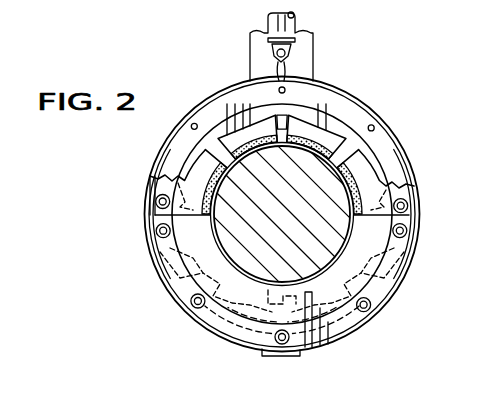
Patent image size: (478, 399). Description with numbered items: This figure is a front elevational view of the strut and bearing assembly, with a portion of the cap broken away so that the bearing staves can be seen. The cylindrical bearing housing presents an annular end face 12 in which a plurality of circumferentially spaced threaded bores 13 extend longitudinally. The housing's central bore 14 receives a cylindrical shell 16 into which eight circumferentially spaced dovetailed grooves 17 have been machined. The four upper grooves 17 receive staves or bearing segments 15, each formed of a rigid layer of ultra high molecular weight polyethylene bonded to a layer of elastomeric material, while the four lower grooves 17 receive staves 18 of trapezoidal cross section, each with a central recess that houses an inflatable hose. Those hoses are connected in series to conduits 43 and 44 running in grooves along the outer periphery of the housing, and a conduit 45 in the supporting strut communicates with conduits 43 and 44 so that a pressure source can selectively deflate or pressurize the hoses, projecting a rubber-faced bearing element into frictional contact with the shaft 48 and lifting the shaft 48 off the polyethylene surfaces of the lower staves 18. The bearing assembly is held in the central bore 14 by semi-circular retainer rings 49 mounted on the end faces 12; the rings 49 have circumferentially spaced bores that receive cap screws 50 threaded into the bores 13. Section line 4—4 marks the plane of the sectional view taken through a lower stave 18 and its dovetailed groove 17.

The section line 4- 4 is at (282, 21).
The annular end faces 12 is at (382, 143).
The threaded bores 13 is at (194, 122).
The central bore 14 is at (200, 172).
The staves or bearing segments 15 is at (223, 138).
The cylindrical shell 16 is at (333, 125).
The dovetailed grooves 17 is at (370, 165).
The staves 18 is at (232, 302).
The conduit 43 is at (157, 218).
The conduit 44 is at (383, 116).
The conduit 45 is at (444, 388).
The shaft 48 is at (296, 249).
The semi-circular retainer rings 49 is at (306, 343).
The cap screws 50 is at (267, 352).